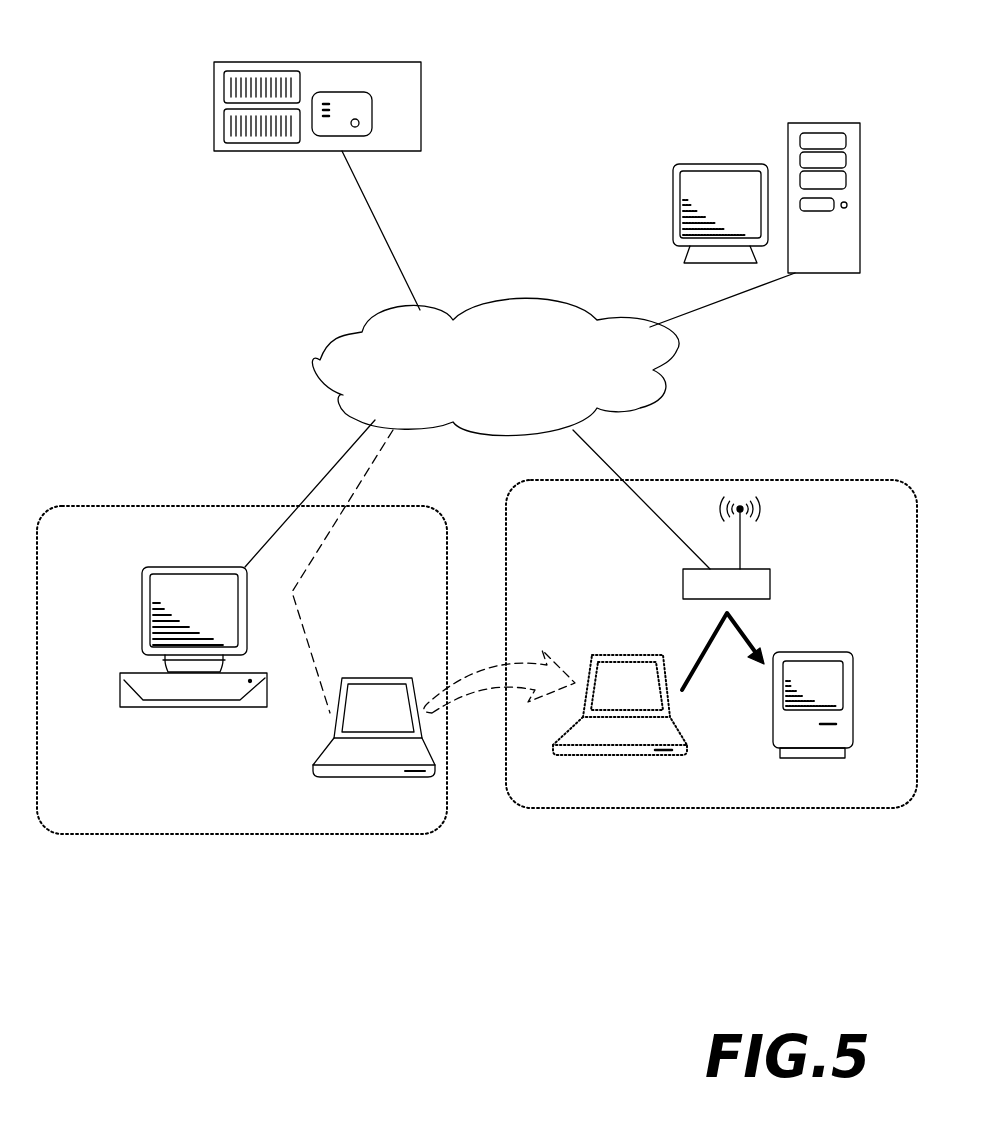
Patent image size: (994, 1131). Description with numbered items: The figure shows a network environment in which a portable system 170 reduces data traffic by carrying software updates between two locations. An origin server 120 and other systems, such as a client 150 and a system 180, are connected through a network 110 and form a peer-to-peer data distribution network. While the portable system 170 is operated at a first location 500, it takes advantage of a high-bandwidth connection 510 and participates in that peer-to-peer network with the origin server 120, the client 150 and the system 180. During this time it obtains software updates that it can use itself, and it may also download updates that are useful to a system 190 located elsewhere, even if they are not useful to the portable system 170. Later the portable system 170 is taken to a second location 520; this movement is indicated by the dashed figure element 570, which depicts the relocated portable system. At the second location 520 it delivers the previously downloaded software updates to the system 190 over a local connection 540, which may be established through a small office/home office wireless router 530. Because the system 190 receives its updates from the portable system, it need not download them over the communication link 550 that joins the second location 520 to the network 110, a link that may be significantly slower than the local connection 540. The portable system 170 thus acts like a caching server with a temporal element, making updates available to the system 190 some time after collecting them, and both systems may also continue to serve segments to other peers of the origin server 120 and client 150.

The network 110 is at (645, 402).
The origin server 120 is at (243, 62).
The client 150 is at (860, 262).
The portable system 170 is at (326, 777).
The system 180 is at (147, 707).
The system 190 is at (850, 750).
The first location 500 is at (72, 845).
The high-bandwidth connection 510 is at (294, 592).
The second location 520 is at (858, 815).
The wireless router 530 is at (770, 573).
The local connection 540 is at (697, 667).
The communication link 550 is at (610, 465).
The dashed figure element 570 is at (578, 755).